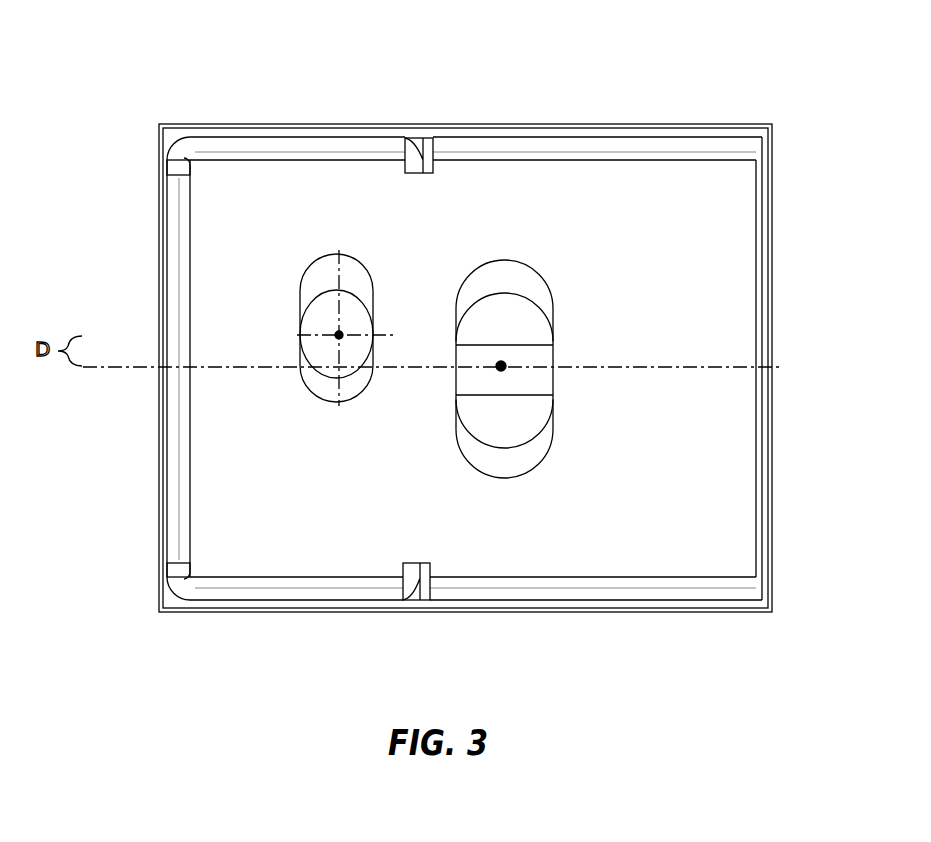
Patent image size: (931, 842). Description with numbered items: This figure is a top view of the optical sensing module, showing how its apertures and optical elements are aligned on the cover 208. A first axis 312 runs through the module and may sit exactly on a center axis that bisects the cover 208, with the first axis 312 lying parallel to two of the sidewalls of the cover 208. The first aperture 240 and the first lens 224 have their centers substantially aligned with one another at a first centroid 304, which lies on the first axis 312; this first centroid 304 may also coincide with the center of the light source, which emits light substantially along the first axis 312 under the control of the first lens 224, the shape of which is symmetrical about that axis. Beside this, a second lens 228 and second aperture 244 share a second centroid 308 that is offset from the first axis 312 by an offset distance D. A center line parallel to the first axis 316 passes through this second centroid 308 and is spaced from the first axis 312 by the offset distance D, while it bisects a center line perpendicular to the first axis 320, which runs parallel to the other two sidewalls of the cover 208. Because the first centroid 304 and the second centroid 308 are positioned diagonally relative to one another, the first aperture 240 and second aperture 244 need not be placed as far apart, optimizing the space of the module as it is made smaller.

The cover 208 is at (355, 168).
The second lens 228 is at (248, 301).
The second aperture 244 is at (318, 262).
The center line perpendicular to the first axis 320 is at (350, 268).
The second centroid 308 is at (339, 335).
The center line parallel to the first axis 316 is at (275, 335).
The first aperture 240 is at (583, 345).
The first lens 224 is at (527, 328).
The first centroid 304 is at (501, 366).
The first axis 312 is at (705, 368).